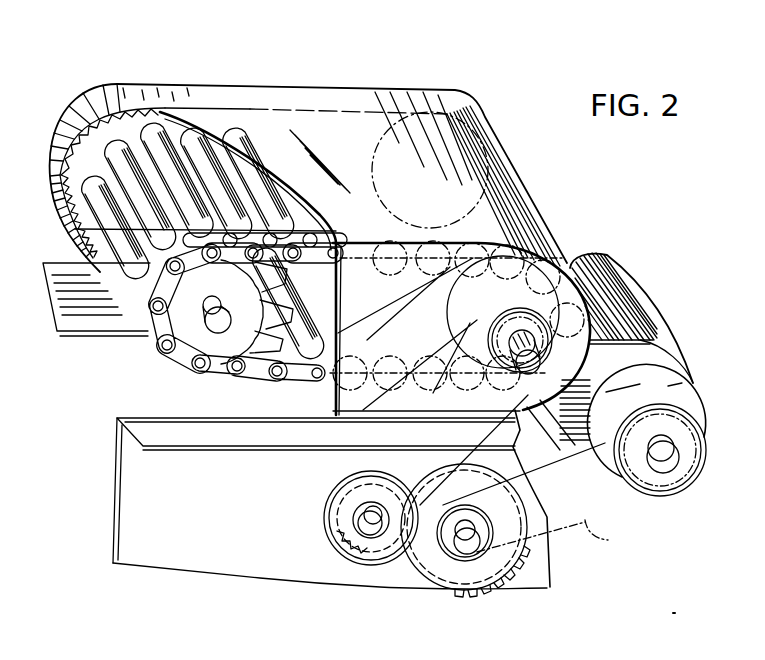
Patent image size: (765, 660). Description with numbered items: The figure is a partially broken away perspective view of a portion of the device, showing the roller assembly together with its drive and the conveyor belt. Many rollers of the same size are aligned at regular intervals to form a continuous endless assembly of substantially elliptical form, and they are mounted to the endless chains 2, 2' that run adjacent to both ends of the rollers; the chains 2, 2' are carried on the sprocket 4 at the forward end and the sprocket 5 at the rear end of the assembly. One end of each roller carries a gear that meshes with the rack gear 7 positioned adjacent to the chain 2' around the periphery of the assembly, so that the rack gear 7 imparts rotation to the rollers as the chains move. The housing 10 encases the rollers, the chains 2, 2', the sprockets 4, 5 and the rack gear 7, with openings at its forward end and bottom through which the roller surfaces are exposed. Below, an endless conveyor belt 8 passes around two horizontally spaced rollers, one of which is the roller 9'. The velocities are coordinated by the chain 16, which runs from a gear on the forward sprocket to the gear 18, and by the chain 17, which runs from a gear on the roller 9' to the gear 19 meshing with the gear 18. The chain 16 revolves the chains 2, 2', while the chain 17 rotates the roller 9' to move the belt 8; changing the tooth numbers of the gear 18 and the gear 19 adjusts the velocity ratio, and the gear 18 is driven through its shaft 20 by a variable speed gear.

The endless chain 2 is at (205, 323).
The endless chain 2' is at (320, 224).
The sprocket 4 is at (200, 335).
The sprocket 5 is at (430, 170).
The rack gear 7 is at (70, 212).
The endless conveyor belt 8 is at (640, 303).
The roller 9' is at (640, 430).
The housing 10 is at (316, 70).
The chain 16 is at (372, 459).
The chain 17 is at (608, 540).
The gear 18 is at (372, 560).
The gear 19 is at (520, 572).
The shaft 20 is at (371, 522).